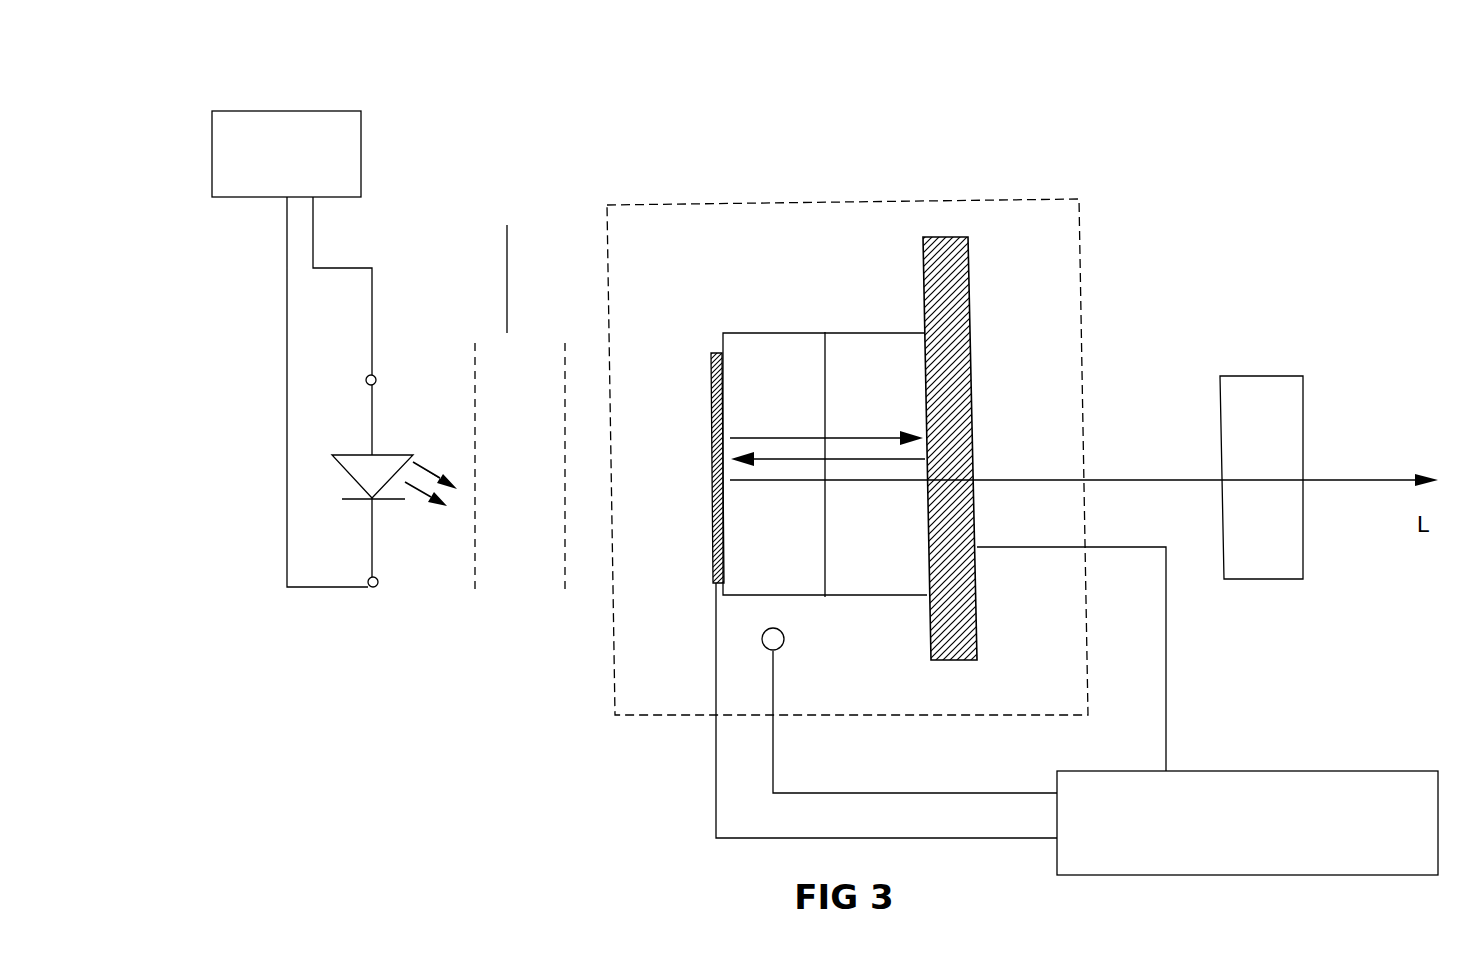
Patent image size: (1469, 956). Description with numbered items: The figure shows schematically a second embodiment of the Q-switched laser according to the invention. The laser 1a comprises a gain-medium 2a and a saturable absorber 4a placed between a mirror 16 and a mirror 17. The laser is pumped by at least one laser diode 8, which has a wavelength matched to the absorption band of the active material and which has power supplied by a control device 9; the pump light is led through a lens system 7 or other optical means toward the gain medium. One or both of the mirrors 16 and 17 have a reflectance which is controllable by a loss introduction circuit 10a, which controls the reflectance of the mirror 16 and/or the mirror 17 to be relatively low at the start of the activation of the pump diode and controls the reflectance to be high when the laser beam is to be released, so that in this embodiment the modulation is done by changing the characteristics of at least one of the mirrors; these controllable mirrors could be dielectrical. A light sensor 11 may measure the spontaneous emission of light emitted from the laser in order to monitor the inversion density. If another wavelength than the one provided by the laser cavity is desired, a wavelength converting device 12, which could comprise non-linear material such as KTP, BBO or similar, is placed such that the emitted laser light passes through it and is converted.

The control device 9 is at (267, 110).
The laser diode 8 is at (388, 512).
The lens system 7 is at (502, 257).
The laser 1a is at (606, 265).
The gain-medium 2a is at (753, 330).
The saturable absorber 4a is at (878, 332).
The mirror 17 is at (973, 352).
The mirror 16 is at (712, 530).
The light sensor 11 is at (800, 640).
The wavelength converting device 12 is at (1255, 375).
The loss introduction circuit 10a is at (1315, 771).